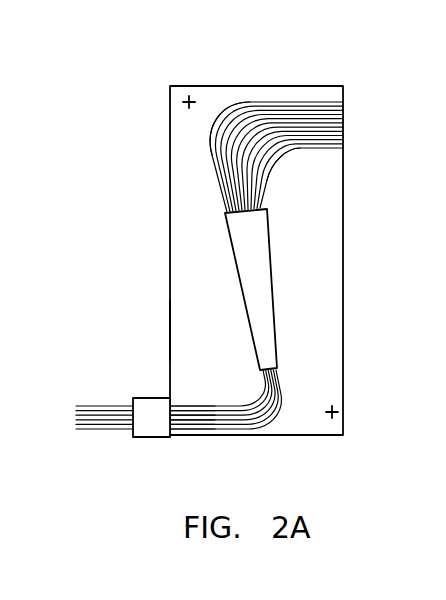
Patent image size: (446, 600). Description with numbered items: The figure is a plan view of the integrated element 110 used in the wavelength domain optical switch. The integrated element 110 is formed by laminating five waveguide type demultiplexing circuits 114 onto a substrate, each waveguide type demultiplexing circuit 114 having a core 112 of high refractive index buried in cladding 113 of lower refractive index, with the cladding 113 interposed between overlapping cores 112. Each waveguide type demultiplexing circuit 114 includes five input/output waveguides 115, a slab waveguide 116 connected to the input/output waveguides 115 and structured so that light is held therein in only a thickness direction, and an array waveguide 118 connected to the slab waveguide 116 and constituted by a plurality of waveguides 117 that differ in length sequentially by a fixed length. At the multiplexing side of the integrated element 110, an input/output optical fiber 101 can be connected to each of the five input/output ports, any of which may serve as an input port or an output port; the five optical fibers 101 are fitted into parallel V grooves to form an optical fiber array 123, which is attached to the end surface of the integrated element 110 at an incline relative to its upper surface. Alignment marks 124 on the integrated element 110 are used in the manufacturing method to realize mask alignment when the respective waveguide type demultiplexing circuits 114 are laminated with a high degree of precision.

The input/output optical fiber 101 is at (97, 410).
The integrated element 110 is at (343, 208).
The core 112 is at (192, 408).
The cladding 113 is at (180, 335).
The waveguide type demultiplexing circuit 114 is at (190, 196).
The input/output waveguides 115 is at (220, 435).
The slab waveguide 116 is at (237, 267).
The waveguides 117 is at (292, 100).
The array waveguide 118 is at (250, 103).
The optical fiber array 123 is at (148, 437).
The alignment marks 124 is at (188, 98).